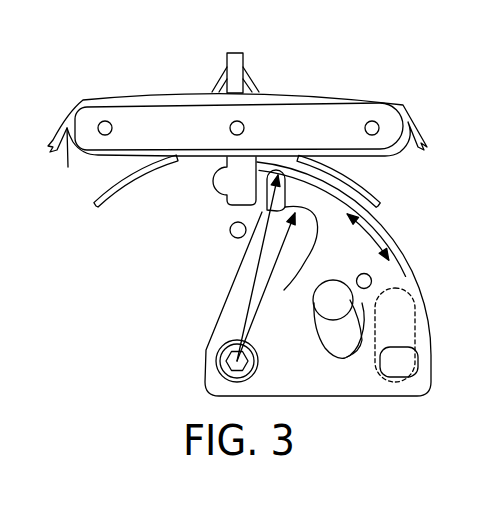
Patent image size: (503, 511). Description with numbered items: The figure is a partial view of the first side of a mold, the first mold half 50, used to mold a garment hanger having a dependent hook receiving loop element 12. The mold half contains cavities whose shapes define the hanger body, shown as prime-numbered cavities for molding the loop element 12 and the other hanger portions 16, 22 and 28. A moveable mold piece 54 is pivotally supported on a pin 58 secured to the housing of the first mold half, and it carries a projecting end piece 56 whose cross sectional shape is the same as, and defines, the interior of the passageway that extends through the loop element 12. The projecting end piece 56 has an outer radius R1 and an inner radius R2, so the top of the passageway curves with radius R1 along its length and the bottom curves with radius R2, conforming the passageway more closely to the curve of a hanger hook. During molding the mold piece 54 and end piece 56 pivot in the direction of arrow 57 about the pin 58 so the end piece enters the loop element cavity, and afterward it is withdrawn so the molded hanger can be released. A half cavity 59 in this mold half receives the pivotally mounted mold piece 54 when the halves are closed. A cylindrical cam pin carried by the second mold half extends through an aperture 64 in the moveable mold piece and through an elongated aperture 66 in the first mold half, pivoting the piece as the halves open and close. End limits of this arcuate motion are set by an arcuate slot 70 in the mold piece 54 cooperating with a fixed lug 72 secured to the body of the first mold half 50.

The dependent hook receiving loop element 12 is at (226, 200).
The hanger body portion 16 is at (194, 138).
The hanger body portion 22 is at (227, 57).
The hanger body portion 28 is at (103, 192).
The first mold half 50 is at (167, 292).
The moveable mold piece 54 is at (258, 292).
The projecting end piece 56 is at (264, 212).
The arrow 57 is at (367, 238).
The pin 58 is at (258, 366).
The half cavity 59 is at (250, 247).
The aperture 64 is at (418, 350).
The elongated aperture 66 is at (375, 322).
The arcuate slot 70 is at (355, 357).
The fixed lug 72 is at (316, 292).
The outer radius R1 is at (258, 268).
The inner radius R2 is at (266, 287).